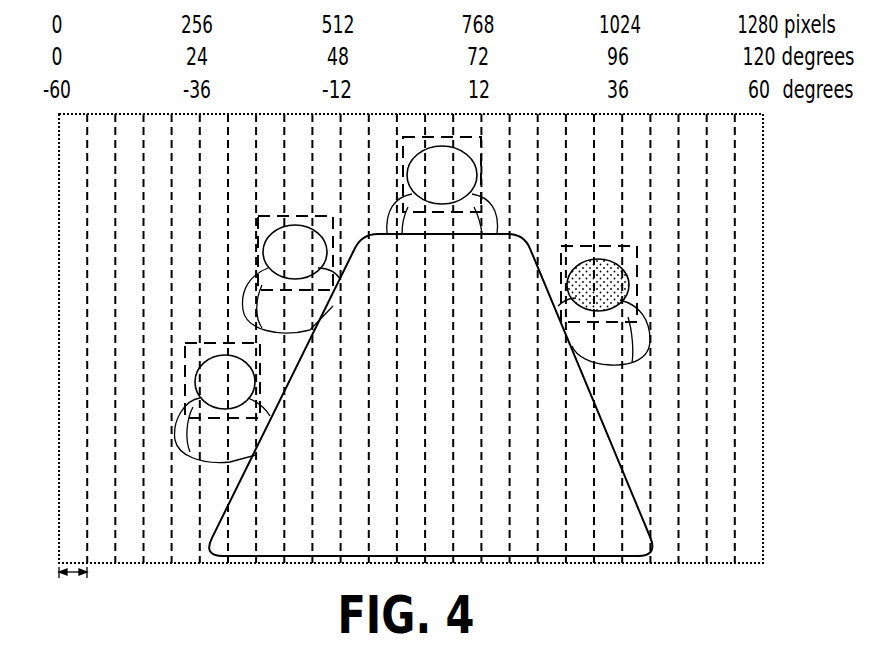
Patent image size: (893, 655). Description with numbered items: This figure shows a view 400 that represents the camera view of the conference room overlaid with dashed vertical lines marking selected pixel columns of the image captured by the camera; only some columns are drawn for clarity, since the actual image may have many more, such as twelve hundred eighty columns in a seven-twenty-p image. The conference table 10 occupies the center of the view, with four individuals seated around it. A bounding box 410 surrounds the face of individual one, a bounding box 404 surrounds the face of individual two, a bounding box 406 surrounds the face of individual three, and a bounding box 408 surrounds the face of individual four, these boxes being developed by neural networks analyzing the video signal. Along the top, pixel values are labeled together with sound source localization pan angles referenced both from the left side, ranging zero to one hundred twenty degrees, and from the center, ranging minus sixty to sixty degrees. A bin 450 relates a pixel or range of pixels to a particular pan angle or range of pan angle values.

The view 400 is at (822, 298).
The conference table 10 is at (639, 508).
The bounding box 404 is at (258, 222).
The bounding box 406 is at (639, 263).
The bounding box 408 is at (483, 149).
The bounding box 410 is at (218, 343).
The bin 450 is at (72, 578).